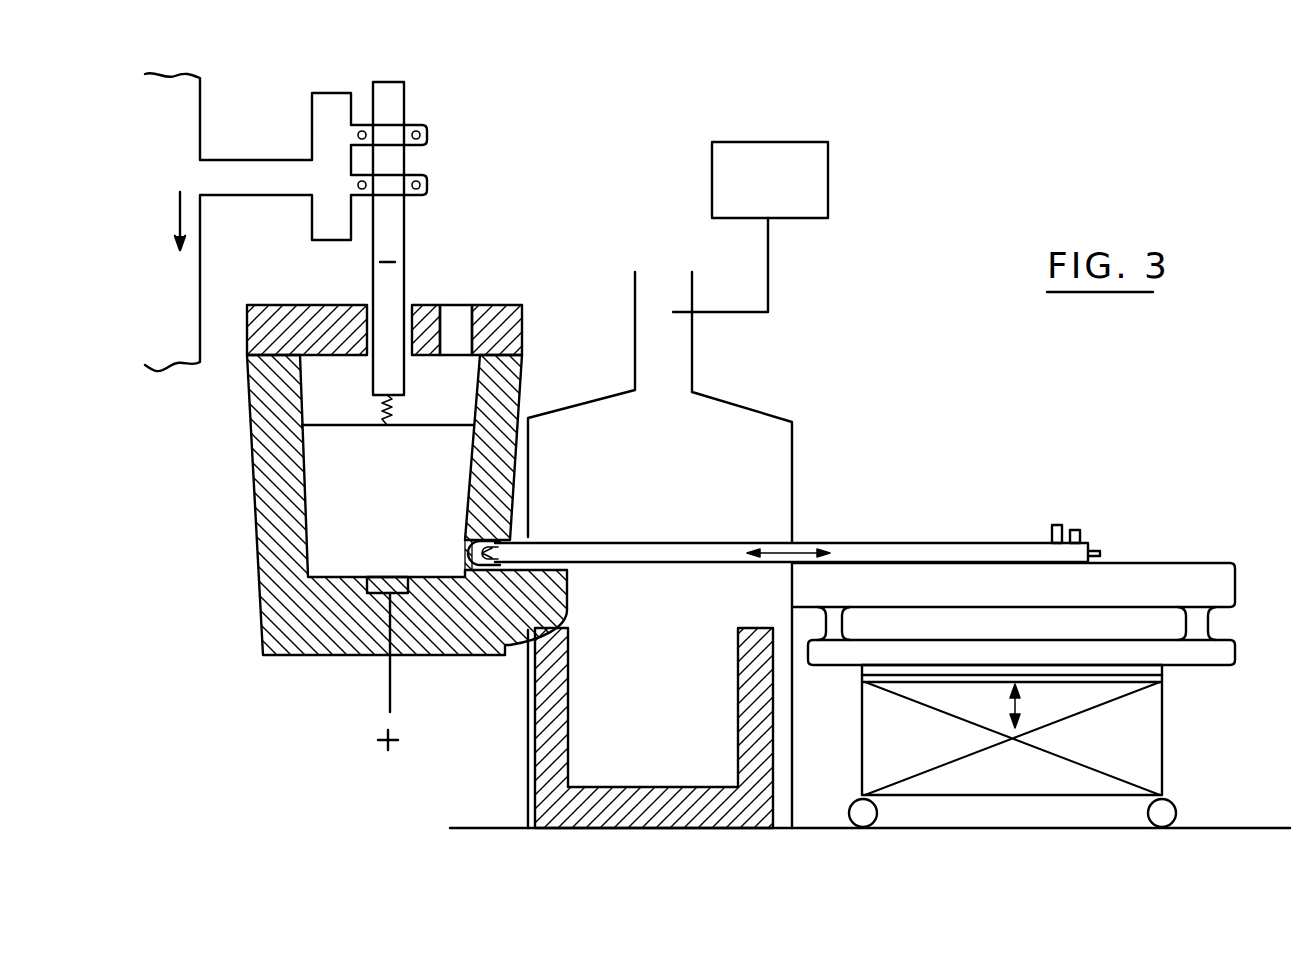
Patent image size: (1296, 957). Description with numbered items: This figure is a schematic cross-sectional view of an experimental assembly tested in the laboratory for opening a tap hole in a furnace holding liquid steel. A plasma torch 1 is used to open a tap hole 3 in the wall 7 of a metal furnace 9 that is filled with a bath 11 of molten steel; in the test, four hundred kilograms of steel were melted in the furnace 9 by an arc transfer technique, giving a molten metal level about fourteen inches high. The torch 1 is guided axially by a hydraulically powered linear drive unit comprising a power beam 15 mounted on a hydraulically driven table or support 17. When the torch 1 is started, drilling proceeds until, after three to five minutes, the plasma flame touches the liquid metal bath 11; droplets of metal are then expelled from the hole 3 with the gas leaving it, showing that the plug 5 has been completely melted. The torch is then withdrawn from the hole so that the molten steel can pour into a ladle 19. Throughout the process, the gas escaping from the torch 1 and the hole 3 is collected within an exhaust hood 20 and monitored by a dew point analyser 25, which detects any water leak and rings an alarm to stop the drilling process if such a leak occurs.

The plasma torch 1 is at (891, 531).
The tap hole 3 is at (502, 543).
The plug 5 is at (466, 548).
The wall 7 is at (524, 373).
The metal furnace 9 is at (240, 552).
The bath 11 is at (384, 527).
The power beam 15 is at (1212, 553).
The table 17 is at (1178, 697).
The ladle 19 is at (631, 830).
The exhaust hood 20 is at (770, 415).
The dew point analyser 25 is at (770, 142).